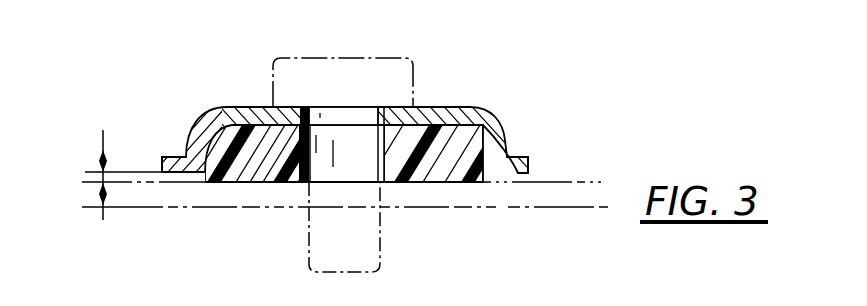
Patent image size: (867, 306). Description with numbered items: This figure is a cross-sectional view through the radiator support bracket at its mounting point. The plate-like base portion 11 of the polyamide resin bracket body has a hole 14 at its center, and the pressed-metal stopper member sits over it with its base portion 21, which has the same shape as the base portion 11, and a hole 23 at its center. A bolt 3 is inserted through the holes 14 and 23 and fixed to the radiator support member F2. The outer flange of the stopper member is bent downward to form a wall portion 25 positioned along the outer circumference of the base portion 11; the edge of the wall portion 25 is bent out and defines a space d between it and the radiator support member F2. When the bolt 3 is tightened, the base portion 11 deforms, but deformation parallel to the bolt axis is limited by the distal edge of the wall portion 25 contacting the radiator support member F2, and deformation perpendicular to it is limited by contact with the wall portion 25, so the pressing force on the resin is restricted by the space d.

The bolt 3 is at (388, 67).
The base portion 11 is at (242, 167).
The hole 14 is at (360, 172).
The base portion 21 is at (237, 107).
The hole 23 is at (330, 110).
The wall portion 25 is at (190, 147).
The space d is at (100, 145).
The radiator support member F2 is at (507, 197).